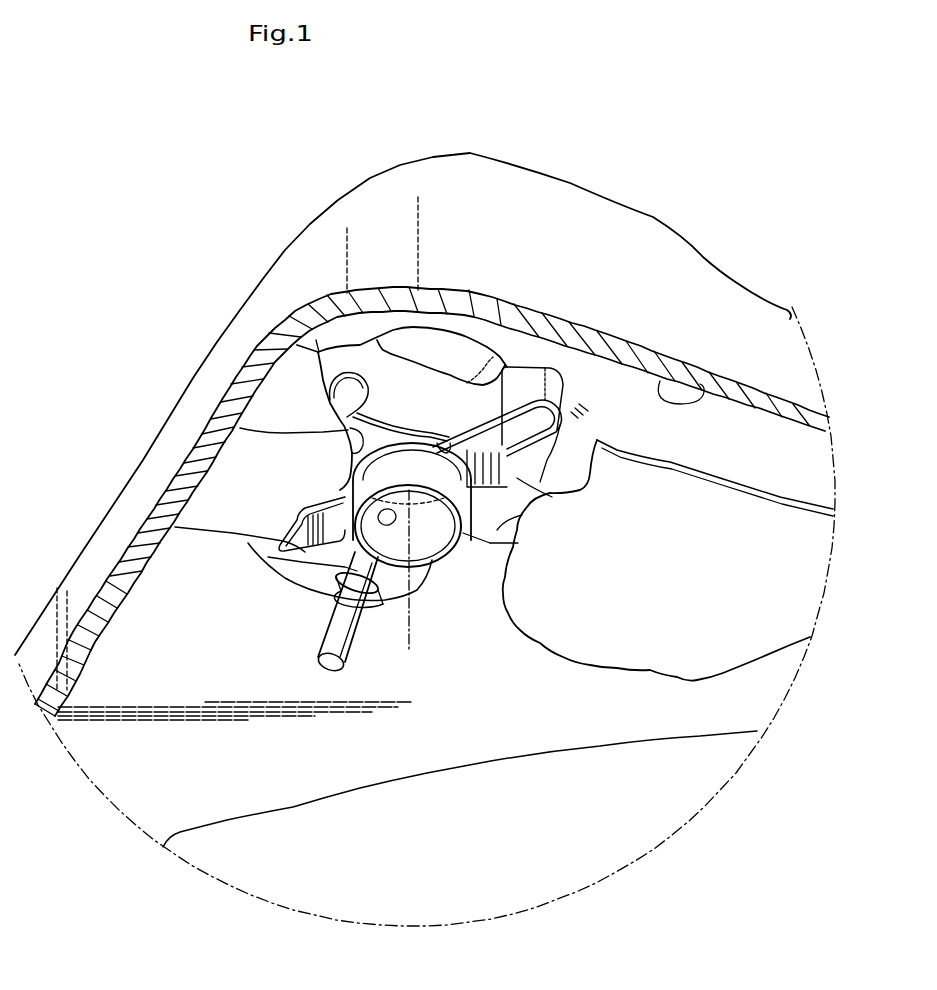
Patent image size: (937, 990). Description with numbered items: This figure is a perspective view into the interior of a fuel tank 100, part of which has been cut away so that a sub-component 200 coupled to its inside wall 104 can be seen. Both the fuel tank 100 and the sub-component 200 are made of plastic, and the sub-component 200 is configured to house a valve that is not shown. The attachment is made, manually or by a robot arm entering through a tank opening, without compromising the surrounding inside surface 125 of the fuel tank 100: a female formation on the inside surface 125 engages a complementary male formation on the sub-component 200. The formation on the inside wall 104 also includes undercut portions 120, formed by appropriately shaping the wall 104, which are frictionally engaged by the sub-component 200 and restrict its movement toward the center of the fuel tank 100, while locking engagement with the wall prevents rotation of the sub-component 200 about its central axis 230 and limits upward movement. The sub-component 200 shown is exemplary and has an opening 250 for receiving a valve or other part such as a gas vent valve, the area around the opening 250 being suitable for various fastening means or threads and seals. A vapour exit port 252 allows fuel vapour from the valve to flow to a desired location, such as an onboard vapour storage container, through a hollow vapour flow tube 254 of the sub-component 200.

The fuel tank 100 is at (222, 238).
The inside wall 104 is at (742, 448).
The undercut portions 120 is at (240, 428).
The inside surface 125 is at (704, 394).
The sub-component 200 is at (366, 482).
The central axis 230 is at (408, 642).
The opening 250 is at (373, 536).
The vapour exit port 252 is at (396, 521).
The hollow vapour flow tube 254 is at (333, 647).